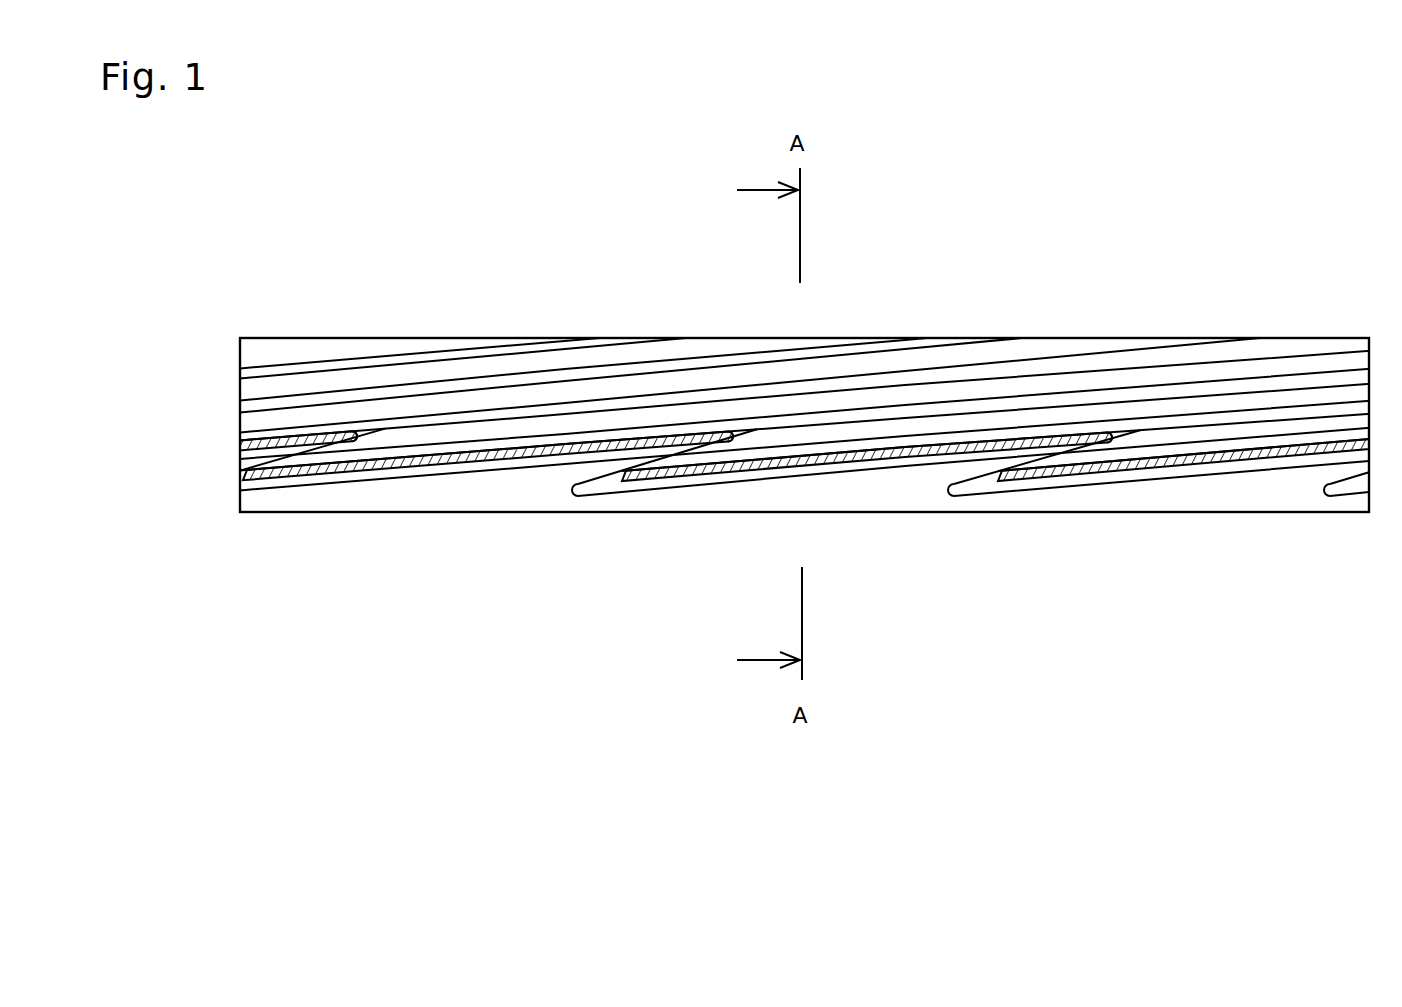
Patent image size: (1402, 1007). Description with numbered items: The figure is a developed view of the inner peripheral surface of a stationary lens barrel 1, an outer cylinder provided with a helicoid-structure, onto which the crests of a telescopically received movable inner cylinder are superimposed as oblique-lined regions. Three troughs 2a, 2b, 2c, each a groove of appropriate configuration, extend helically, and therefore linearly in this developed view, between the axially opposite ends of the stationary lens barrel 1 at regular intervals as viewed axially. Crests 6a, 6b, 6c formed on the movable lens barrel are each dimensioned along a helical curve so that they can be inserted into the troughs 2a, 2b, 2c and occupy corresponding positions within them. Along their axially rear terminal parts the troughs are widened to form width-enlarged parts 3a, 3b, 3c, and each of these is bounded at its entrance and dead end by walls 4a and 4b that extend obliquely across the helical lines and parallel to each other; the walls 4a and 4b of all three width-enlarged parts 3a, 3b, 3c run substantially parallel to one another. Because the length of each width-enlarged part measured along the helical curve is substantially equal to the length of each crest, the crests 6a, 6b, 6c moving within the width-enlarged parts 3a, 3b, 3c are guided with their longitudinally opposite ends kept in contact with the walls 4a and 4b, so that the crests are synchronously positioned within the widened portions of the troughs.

The stationary lens barrel 1 is at (804, 360).
The trough 2a is at (463, 294).
The trough 2b is at (631, 310).
The trough 2c is at (804, 333).
The width-enlarged part 3a is at (486, 564).
The width-enlarged part 3b is at (867, 565).
The width-enlarged part 3c is at (1183, 568).
The wall 4a is at (651, 452).
The wall 4b is at (804, 549).
The crest 6a is at (804, 524).
The crest 6b is at (995, 555).
The crest 6c is at (1183, 568).